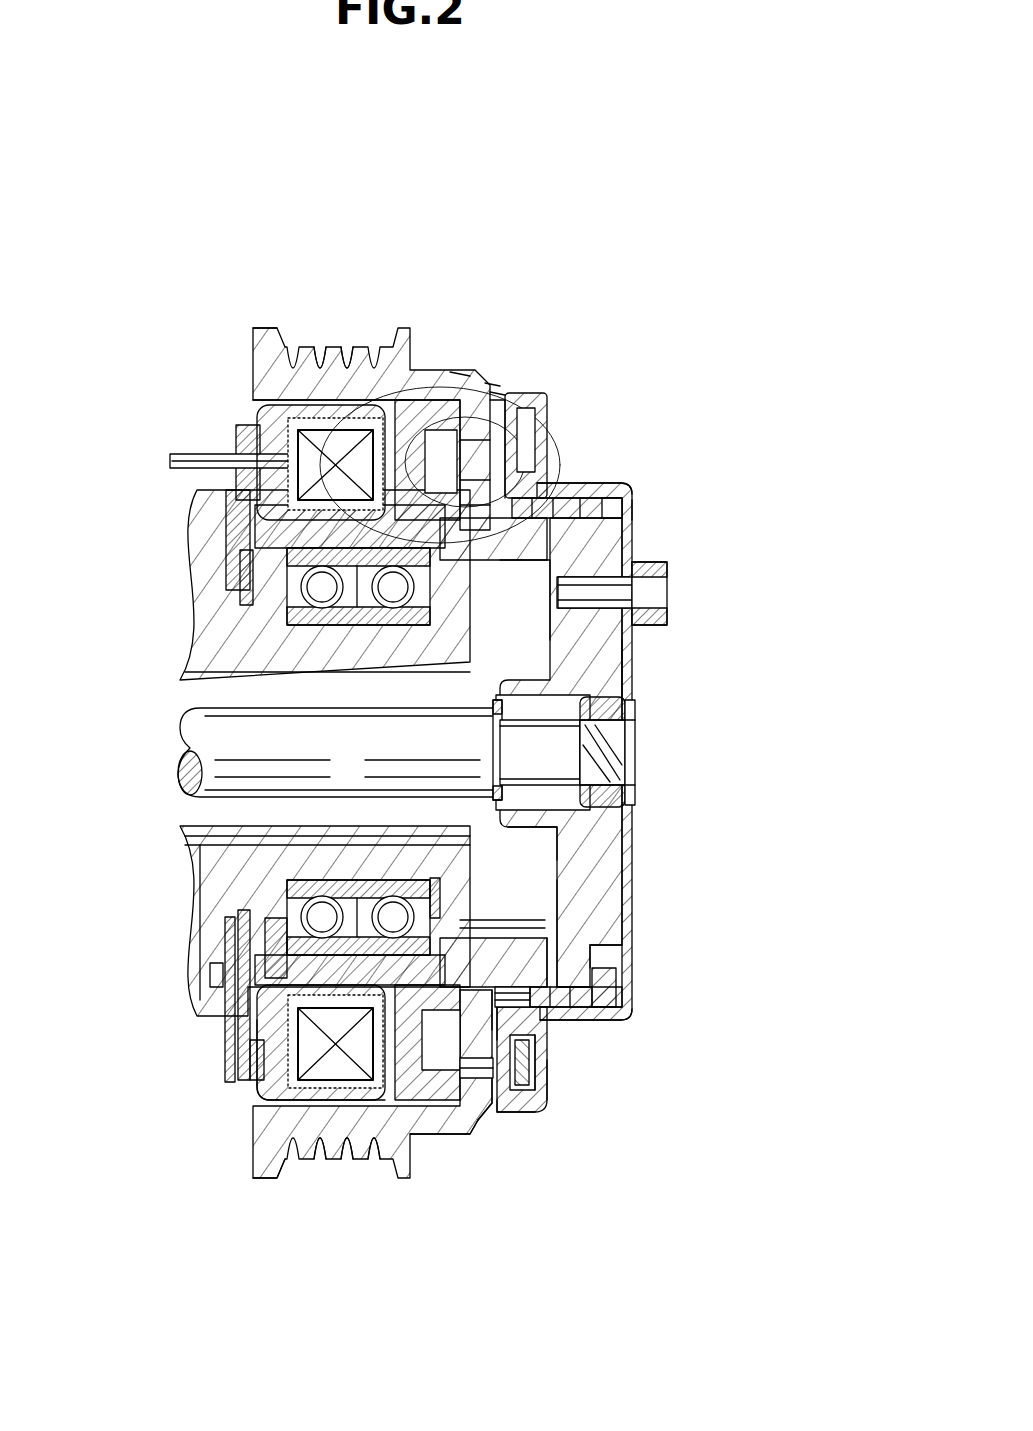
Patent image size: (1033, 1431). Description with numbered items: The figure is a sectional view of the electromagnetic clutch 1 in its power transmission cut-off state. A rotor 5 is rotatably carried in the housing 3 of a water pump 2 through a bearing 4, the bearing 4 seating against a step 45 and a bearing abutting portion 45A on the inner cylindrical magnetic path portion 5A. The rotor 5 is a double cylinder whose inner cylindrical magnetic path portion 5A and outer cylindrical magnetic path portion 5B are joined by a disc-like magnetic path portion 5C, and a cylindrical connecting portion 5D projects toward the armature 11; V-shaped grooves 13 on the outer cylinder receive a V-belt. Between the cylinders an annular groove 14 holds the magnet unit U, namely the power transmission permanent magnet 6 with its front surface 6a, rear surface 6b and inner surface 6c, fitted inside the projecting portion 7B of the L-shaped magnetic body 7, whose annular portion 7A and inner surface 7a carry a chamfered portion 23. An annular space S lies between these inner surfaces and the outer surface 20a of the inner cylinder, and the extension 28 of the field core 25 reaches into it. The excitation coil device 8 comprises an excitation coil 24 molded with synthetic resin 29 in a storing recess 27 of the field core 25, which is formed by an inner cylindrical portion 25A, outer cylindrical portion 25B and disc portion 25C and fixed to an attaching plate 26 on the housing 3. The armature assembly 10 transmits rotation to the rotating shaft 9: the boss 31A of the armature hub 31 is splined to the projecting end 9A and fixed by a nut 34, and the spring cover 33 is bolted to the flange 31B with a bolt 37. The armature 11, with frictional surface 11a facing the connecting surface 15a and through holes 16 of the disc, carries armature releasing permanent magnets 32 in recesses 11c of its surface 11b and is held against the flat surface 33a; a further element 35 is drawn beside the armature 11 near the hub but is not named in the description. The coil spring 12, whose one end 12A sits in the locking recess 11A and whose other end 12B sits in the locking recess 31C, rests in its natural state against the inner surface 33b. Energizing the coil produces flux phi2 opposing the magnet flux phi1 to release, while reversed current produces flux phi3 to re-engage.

The electromagnetic clutch 1 is at (716, 310).
The water pump 2 is at (120, 640).
The housing 3 is at (250, 925).
The bearing 4 is at (290, 870).
The rotor 5 is at (234, 336).
The inner cylindrical magnetic path portion 5A is at (465, 950).
The outer cylindrical magnetic path portion 5B is at (448, 1125).
The disc-like magnetic path portion 5C is at (510, 1115).
The cylindrical connecting portion 5D is at (600, 948).
The power transmission permanent magnet 6 is at (428, 380).
The front surface 6a is at (489, 541).
The rear surface 6b is at (462, 523).
The inner surface 6c is at (479, 566).
The magnetic body 7 is at (383, 250).
The annular portion 7A is at (345, 335).
The annular projecting portion 7B is at (382, 335).
The inner surface 7a is at (350, 565).
The excitation coil device 8 is at (240, 418).
The rotating shaft 9 is at (178, 742).
The projecting end 9A is at (555, 745).
The armature assembly 10 is at (704, 658).
The armature 11 is at (523, 447).
The locking recess 11A is at (519, 607).
The frictional surface 11a is at (520, 1030).
The surface 11b is at (535, 1090).
The recesses 11c is at (545, 1065).
The coil spring 12 is at (596, 1016).
The one end 12A is at (532, 495).
The lower plate portion 12B is at (616, 985).
The V-shaped grooves 13 is at (372, 1160).
The annular groove 14 is at (347, 1170).
The connecting surface 15a is at (520, 1110).
The through holes 16 is at (550, 408).
The outer surface 20a is at (500, 912).
The chamfered portion 23 is at (310, 1150).
The excitation coil 24 is at (225, 1040).
The field core 25 is at (232, 1080).
The inner cylindrical portion 25A is at (340, 880).
The outer cylindrical portion 25B is at (268, 1100).
The disc portion 25C is at (265, 1085).
The attaching plate 26 is at (240, 1003).
The storing recess 27 is at (300, 1180).
The extension 28 is at (398, 880).
The synthetic resin 29 is at (245, 1080).
The armature hub 31 is at (737, 790).
The boss 31A is at (563, 808).
The flange 31B is at (590, 905).
The locking recess 31C is at (607, 965).
The armature releasing permanent magnets 32 is at (560, 1050).
The spring cover 33 is at (634, 522).
The flat surface 33a is at (558, 468).
The inner surface 33b is at (633, 1002).
The nut 34 is at (612, 752).
The rivet 35 is at (565, 1040).
The bolt 37 is at (669, 600).
The step 45 is at (280, 932).
The bearing abutting portion 45A is at (437, 880).
The magnet unit U is at (322, 200).
The annular space S is at (492, 919).
The magnetic flux phi1 is at (490, 392).
The magnetic flux phi2 is at (485, 383).
The magnetic flux phi3 is at (450, 372).